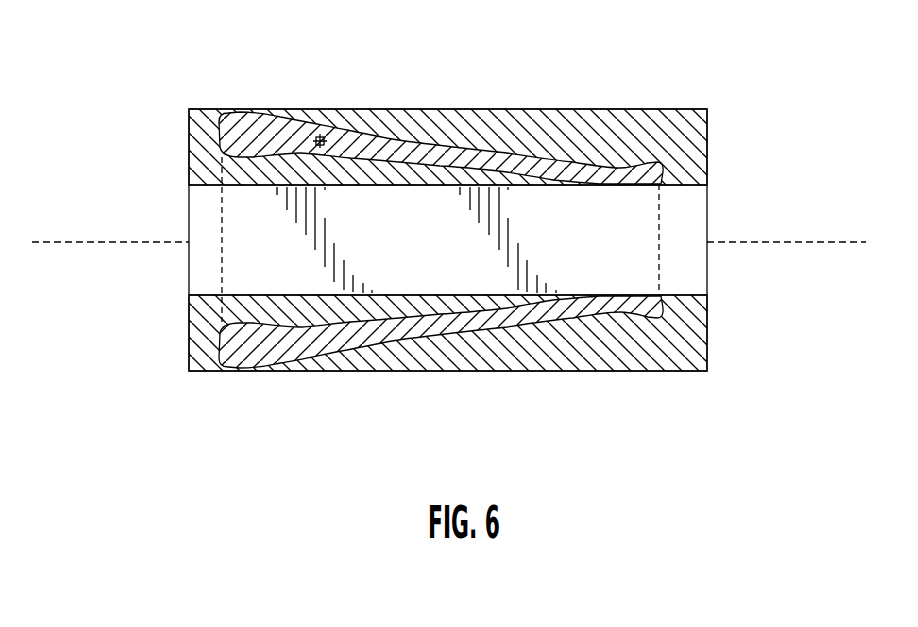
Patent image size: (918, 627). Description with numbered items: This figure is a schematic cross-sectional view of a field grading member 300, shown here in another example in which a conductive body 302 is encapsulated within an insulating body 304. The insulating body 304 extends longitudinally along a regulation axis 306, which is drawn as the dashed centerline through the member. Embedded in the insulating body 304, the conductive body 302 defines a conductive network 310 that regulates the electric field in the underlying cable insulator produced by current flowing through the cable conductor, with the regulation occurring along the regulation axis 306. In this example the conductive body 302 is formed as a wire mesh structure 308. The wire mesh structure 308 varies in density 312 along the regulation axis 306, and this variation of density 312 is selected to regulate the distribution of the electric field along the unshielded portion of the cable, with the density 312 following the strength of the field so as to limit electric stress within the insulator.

The field grading member 300 is at (449, 307).
The conductive body 302 is at (400, 133).
The insulating body 304 is at (640, 117).
The regulation axis 306 is at (757, 243).
The wire mesh structure 308 is at (432, 347).
The conductive network 310 is at (335, 337).
The density 312 is at (320, 138).